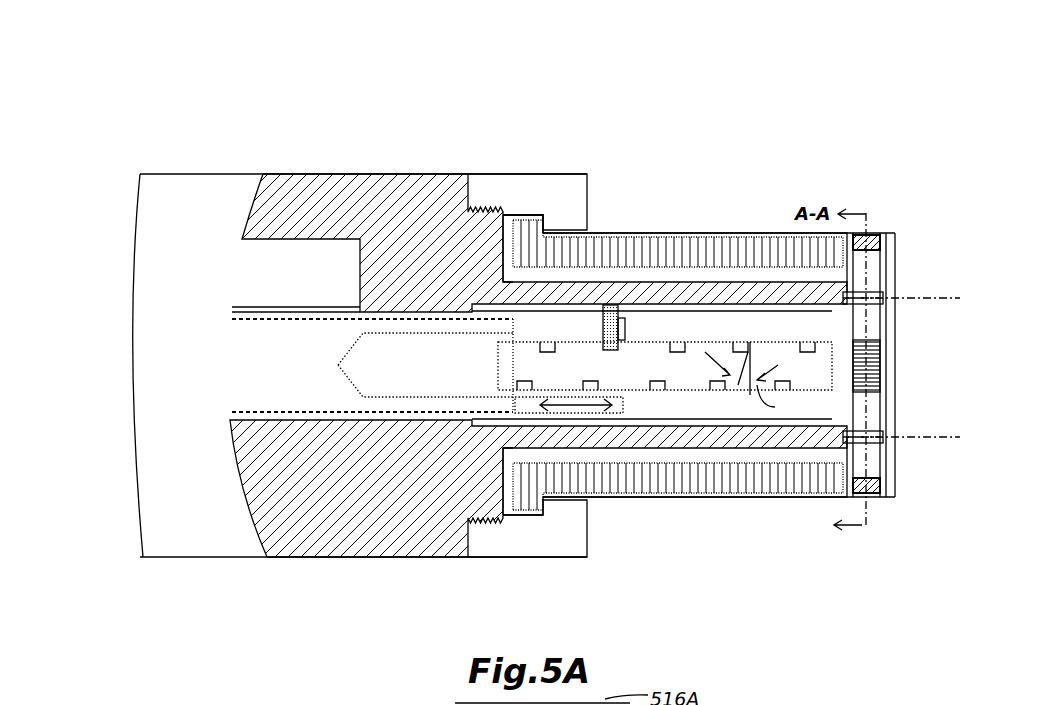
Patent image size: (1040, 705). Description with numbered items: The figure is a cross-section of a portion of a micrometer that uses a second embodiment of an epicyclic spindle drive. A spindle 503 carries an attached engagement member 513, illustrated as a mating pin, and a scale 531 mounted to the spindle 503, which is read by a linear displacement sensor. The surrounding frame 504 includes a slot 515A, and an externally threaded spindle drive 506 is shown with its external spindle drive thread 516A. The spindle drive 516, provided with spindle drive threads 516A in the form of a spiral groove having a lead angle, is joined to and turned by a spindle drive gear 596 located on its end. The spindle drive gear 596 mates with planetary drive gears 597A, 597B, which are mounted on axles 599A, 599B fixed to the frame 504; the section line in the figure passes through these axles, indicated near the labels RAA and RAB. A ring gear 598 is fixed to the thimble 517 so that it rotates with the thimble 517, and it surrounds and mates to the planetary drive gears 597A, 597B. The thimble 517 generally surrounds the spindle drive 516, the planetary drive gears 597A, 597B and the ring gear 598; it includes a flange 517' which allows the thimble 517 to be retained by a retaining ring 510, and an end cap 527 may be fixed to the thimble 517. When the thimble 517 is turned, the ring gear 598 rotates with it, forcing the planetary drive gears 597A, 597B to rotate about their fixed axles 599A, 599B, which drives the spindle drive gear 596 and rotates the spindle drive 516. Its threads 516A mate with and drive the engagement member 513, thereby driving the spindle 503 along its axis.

The frame 504 is at (293, 205).
The externally threaded spindle drive 506 is at (343, 247).
The retaining ring 510 is at (513, 186).
The engagement member 513 is at (608, 305).
The slot 515A is at (700, 310).
The thimble 517 is at (771, 322).
The flange 517' is at (595, 311).
The spindle drive 516 is at (642, 375).
The spindle drive thread 516A is at (652, 383).
The spindle 503 is at (305, 397).
The scale 531 is at (270, 392).
The end cap 527 is at (893, 385).
The spindle drive gear 596 is at (868, 356).
The planetary drive gear 597A is at (868, 267).
The planetary drive gear 597B is at (870, 467).
The ring gear 598 is at (870, 242).
The axle 599A is at (878, 297).
The axle 599B is at (880, 435).
The axis A RAA is at (943, 300).
The axis B RAB is at (945, 439).